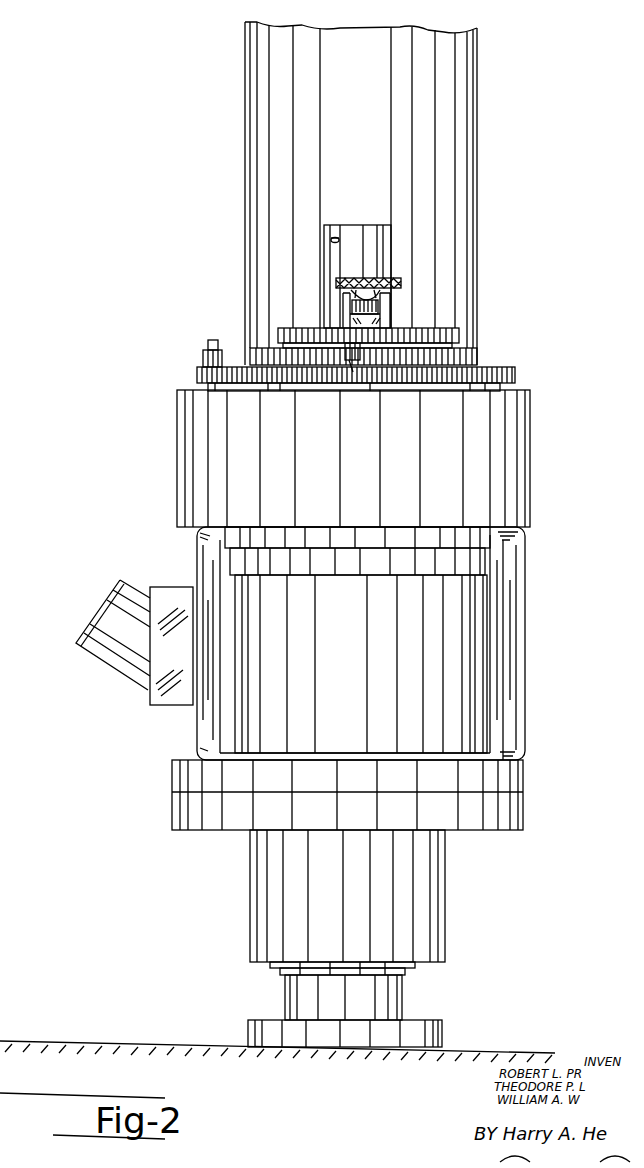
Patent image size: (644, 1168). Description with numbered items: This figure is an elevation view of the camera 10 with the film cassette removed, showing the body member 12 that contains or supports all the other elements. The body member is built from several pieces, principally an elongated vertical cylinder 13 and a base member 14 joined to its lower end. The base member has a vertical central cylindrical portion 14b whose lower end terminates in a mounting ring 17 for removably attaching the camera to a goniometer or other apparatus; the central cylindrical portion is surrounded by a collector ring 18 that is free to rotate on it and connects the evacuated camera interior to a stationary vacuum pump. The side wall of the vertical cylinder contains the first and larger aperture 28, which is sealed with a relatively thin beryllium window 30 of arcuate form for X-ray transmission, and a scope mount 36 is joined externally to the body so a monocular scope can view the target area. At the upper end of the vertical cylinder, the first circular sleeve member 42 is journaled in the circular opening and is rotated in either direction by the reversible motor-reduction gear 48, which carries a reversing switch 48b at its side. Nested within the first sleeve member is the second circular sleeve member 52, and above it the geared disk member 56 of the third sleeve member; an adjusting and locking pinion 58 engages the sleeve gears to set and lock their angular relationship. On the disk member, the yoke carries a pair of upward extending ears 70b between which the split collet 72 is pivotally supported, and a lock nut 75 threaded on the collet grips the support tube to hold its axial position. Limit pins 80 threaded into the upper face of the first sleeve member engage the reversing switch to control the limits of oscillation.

The camera 10 is at (558, 355).
The body member 12 is at (542, 433).
The vertical cylinder 13 is at (532, 471).
The base member 14 is at (200, 838).
The vertical central cylindrical portion 14b is at (396, 1000).
The mounting ring 17 is at (248, 1030).
The collector ring 18 is at (446, 889).
The aperture 28 is at (522, 569).
The beryllium window 30 is at (350, 647).
The scope mount 36 is at (119, 576).
The first circular sleeve member 42 is at (515, 378).
The motor-reduction gear 48 is at (360, 108).
The reversing switch 48b is at (350, 225).
The second circular sleeve member 52 is at (478, 360).
The disk member 56 is at (460, 337).
The pinion 58 is at (354, 370).
The upward extending ears 70b is at (392, 305).
The split collet 72 is at (350, 305).
The lock nut 75 is at (400, 283).
The limit pins 80 is at (203, 362).